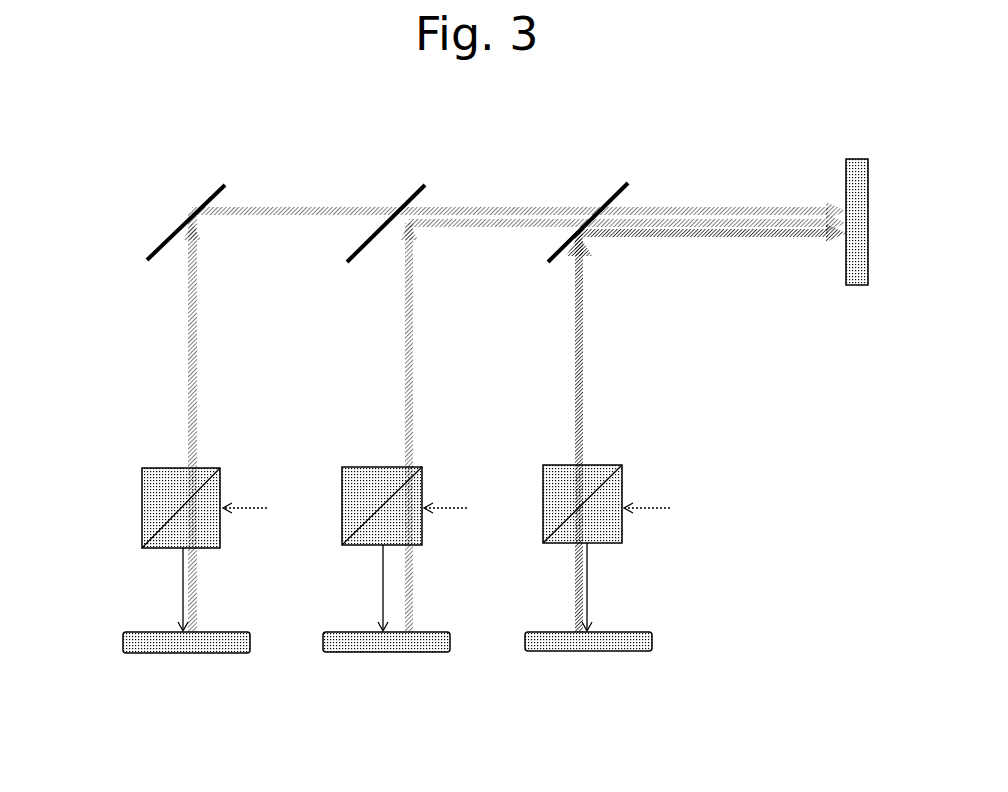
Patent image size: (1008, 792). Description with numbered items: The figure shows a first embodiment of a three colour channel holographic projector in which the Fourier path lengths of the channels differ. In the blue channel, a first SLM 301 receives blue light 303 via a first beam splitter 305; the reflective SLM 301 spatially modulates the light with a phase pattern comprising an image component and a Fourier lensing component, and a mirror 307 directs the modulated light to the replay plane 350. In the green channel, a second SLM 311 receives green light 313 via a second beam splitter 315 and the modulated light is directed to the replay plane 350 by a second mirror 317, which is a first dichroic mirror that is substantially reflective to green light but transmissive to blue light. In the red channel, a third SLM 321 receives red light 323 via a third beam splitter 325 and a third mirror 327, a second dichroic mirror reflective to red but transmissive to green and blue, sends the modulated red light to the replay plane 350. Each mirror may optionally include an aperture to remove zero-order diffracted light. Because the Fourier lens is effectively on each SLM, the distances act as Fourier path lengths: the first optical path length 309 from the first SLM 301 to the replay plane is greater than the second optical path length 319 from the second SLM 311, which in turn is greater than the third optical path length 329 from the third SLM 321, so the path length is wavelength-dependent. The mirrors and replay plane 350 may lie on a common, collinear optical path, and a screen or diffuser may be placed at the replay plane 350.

The first SLM 301 is at (140, 642).
The blue light 303 is at (257, 489).
The first beam splitter 305 is at (150, 483).
The mirror 307 is at (212, 192).
The first optical path length 309 is at (190, 380).
The second SLM 311 is at (405, 640).
The green light 313 is at (458, 489).
The second beam splitter 315 is at (357, 508).
The second mirror 317 is at (412, 195).
The second optical path length 319 is at (407, 358).
The third SLM 321 is at (550, 638).
The red light 323 is at (658, 489).
The third beam splitter 325 is at (558, 515).
The third mirror 327 is at (617, 192).
The third optical path length 329 is at (578, 378).
The replay plane 350 is at (857, 182).